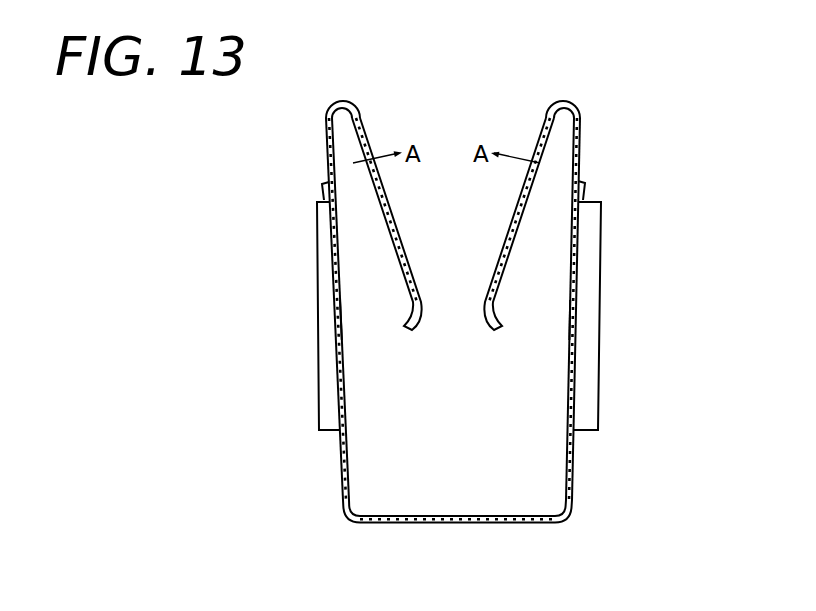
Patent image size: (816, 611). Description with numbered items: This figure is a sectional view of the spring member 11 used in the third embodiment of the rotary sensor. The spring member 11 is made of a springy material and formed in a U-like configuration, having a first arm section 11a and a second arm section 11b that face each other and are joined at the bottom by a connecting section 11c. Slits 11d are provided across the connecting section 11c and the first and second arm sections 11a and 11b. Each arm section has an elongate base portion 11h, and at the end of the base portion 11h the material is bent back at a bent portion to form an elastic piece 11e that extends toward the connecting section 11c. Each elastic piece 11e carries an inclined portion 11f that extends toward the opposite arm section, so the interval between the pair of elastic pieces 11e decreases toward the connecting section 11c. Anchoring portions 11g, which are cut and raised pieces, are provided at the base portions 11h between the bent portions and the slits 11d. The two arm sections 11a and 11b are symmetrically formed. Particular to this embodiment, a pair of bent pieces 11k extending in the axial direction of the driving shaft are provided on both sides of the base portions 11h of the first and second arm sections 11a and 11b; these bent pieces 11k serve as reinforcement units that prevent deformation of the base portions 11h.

The spring member 11 is at (332, 526).
The first arm section 11a is at (325, 134).
The second arm section 11b is at (583, 131).
The connecting section 11c is at (432, 524).
The slits 11d is at (575, 455).
The elastic piece 11e is at (371, 142).
The inclined portion 11f is at (407, 256).
The anchoring portions 11g is at (322, 186).
The base portion 11h is at (346, 318).
The bent pieces 11k is at (318, 340).